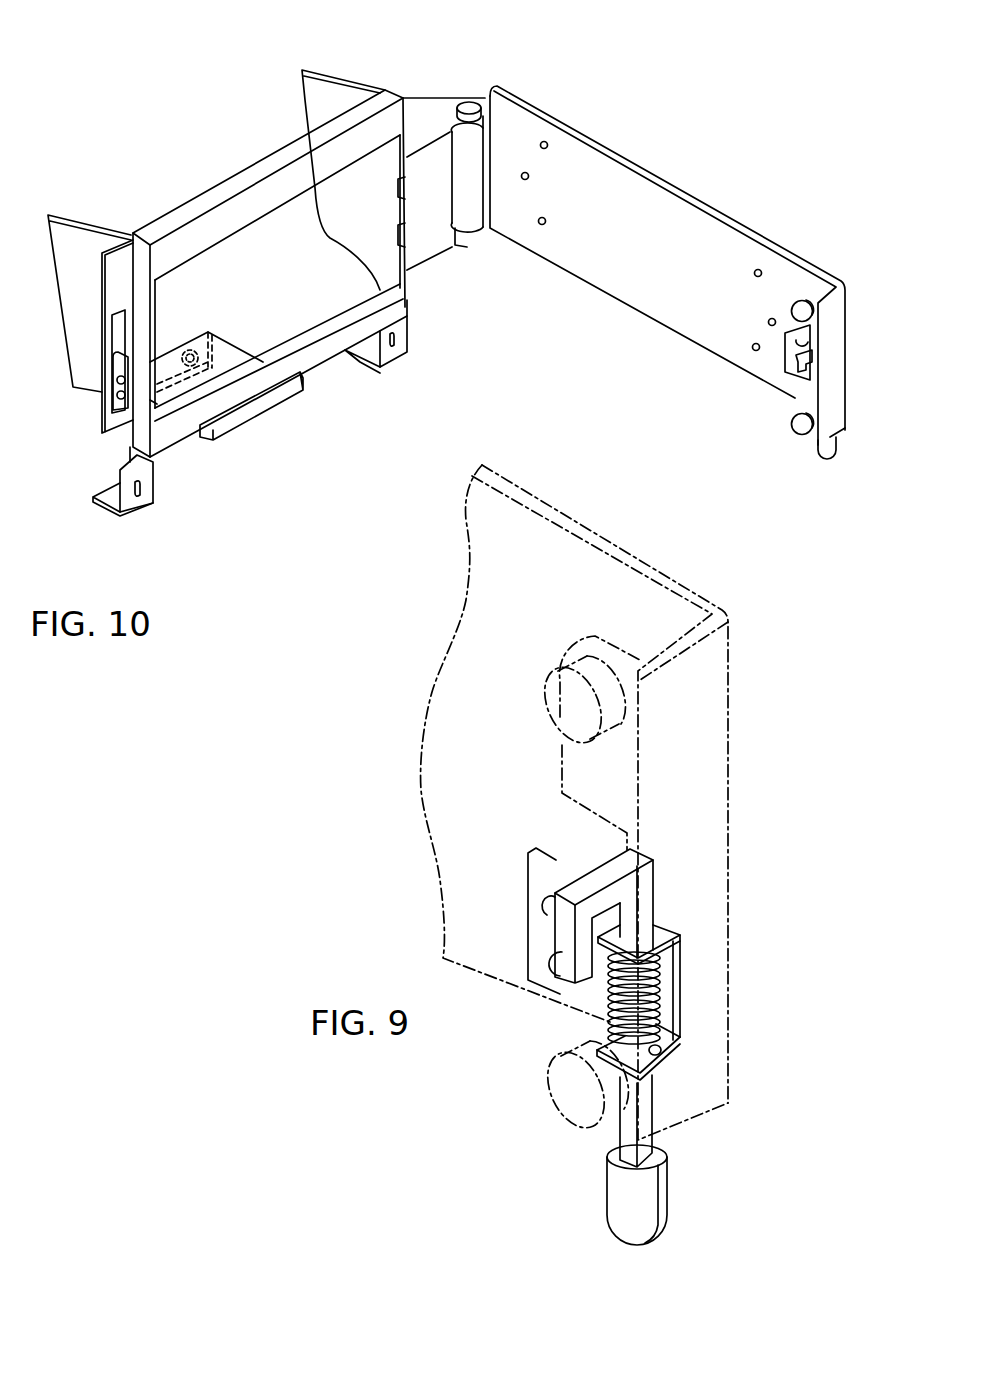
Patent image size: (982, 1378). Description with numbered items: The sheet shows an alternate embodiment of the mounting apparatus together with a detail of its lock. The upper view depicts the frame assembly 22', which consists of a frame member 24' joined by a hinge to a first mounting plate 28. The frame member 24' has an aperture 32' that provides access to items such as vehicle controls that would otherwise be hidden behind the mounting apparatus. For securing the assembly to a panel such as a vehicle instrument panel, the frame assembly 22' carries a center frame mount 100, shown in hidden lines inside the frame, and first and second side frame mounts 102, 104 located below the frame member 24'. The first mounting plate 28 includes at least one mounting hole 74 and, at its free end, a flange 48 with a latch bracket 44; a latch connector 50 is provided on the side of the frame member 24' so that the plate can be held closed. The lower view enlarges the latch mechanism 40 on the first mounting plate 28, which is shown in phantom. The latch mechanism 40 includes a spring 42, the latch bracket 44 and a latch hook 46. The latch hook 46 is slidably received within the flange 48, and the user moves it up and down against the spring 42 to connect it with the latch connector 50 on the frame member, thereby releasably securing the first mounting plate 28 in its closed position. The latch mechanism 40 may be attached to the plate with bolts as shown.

In FIG. 10, the frame assembly 22' is at (456, 301).
In FIG. 10, the frame member 24' is at (266, 263).
In FIG. 10, the aperture 32' is at (226, 334).
In FIG. 10, the center frame mount 100 is at (200, 330).
In FIG. 10, the latch connector 50 is at (112, 390).
In FIG. 10, the first side frame mount 102 is at (132, 508).
In FIG. 10, the second side frame mount 104 is at (380, 355).
In FIG. 10, the first mounting plate 28 is at (625, 203).
In FIG. 9, the first mounting plate 28 is at (452, 702).
In FIG. 10, the mounting hole 74 is at (769, 322).
In FIG. 10, the latch bracket 44 is at (790, 355).
In FIG. 9, the latch bracket 44 is at (535, 916).
In FIG. 10, the flange 48 is at (833, 393).
In FIG. 9, the latch mechanism 40 is at (577, 1026).
In FIG. 9, the latch hook 46 is at (602, 873).
In FIG. 9, the spring 42 is at (667, 1000).